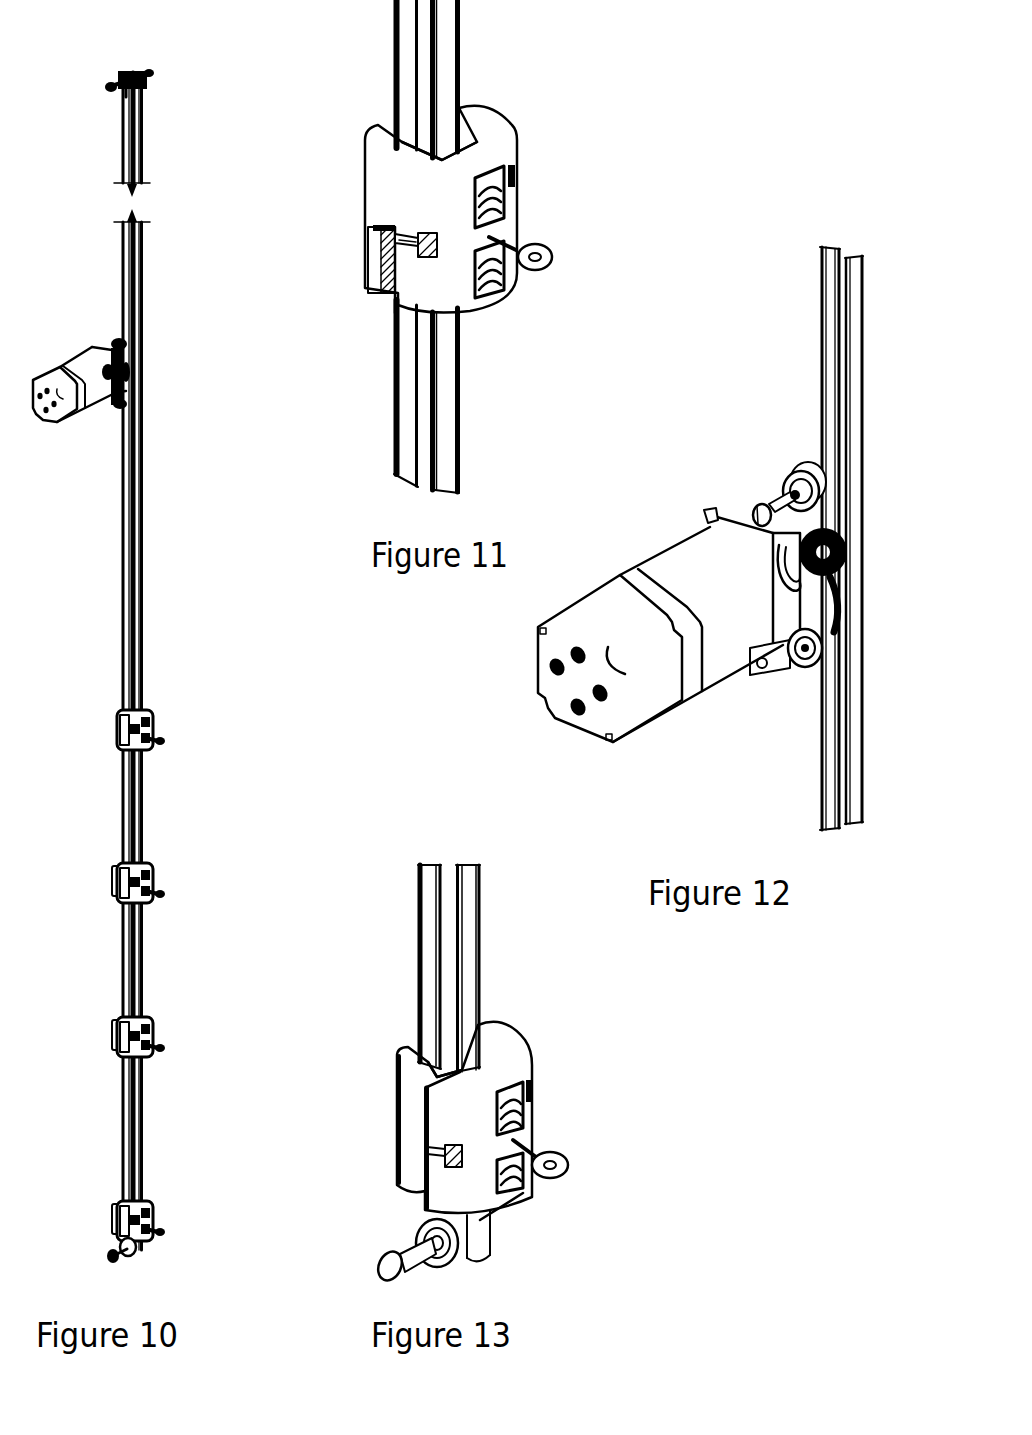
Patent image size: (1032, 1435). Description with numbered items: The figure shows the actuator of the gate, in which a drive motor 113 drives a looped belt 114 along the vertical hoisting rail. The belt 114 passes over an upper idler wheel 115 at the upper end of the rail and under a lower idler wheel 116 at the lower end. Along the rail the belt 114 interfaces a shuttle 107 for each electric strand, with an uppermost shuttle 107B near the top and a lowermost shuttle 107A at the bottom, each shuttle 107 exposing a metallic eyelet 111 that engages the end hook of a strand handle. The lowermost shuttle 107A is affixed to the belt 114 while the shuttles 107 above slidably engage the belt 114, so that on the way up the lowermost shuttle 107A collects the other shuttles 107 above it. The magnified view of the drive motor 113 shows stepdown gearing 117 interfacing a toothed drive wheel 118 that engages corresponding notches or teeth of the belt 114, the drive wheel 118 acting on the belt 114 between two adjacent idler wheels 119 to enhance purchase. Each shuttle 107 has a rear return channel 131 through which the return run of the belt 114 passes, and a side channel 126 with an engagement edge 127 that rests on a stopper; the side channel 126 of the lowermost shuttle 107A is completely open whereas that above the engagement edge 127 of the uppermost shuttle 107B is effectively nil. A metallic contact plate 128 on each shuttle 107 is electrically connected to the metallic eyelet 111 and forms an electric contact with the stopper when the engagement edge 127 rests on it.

In FIG. 10, the shuttle 107 is at (166, 866).
In FIG. 10, the lowermost shuttle 107A is at (171, 1206).
In FIG. 13, the lowermost shuttle 107A is at (540, 1026).
In FIG. 10, the uppermost shuttle 107B is at (166, 714).
In FIG. 11, the uppermost shuttle 107B is at (530, 112).
In FIG. 11, the metallic eyelet 111 is at (545, 243).
In FIG. 10, the drive motor 113 is at (51, 441).
In FIG. 12, the drive motor 113 is at (575, 757).
In FIG. 10, the looped belt 114 is at (141, 281).
In FIG. 11, the looped belt 114 is at (448, 37).
In FIG. 12, the looped belt 114 is at (857, 432).
In FIG. 13, the looped belt 114 is at (471, 898).
In FIG. 10, the upper idler wheel 115 is at (127, 68).
In FIG. 10, the lower idler wheel 116 is at (138, 1251).
In FIG. 12, the stepdown gearing 117 is at (690, 562).
In FIG. 12, the drive wheel 118 is at (838, 540).
In FIG. 12, the idler wheels 119 is at (778, 481).
In FIG. 11, the side channel 126 is at (364, 273).
In FIG. 13, the side channel 126 is at (382, 1150).
In FIG. 11, the engagement edge 127 is at (414, 242).
In FIG. 11, the metallic contact plate 128 is at (364, 239).
In FIG. 11, the rear return channel 131 is at (381, 106).
In FIG. 13, the rear return channel 131 is at (402, 1024).